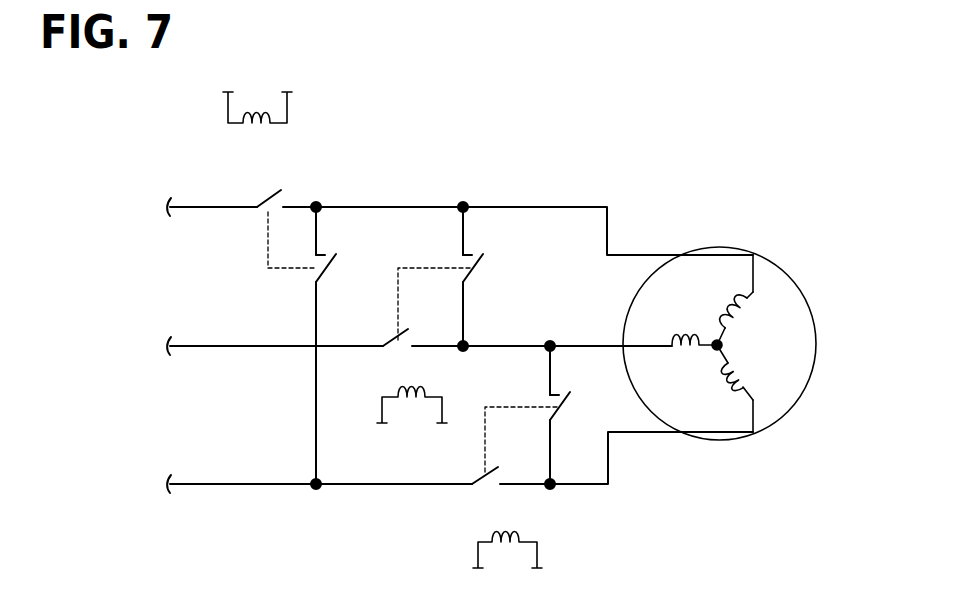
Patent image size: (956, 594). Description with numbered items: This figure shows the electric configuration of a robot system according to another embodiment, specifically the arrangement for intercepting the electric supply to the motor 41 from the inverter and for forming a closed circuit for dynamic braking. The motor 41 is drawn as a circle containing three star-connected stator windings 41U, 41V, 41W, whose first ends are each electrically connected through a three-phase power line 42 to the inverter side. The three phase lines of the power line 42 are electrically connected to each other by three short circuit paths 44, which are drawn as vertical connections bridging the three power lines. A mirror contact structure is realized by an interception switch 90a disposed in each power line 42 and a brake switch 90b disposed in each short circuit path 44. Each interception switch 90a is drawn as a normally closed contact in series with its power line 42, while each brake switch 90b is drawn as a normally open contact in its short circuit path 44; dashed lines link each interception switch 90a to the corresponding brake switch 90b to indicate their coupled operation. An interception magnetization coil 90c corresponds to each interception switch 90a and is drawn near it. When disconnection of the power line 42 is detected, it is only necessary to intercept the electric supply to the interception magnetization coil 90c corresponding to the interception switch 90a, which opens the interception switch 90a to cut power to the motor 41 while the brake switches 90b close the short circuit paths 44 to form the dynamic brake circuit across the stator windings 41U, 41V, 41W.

The power line 42 is at (197, 207).
The interception switch 90a is at (264, 205).
The brake switch 90b is at (326, 268).
The interception magnetization coil 90c is at (272, 126).
The short circuit path 44 is at (316, 424).
The motor 41 is at (787, 273).
The stator winding 41U is at (736, 325).
The stator winding 41V is at (681, 352).
The stator winding 41W is at (742, 365).